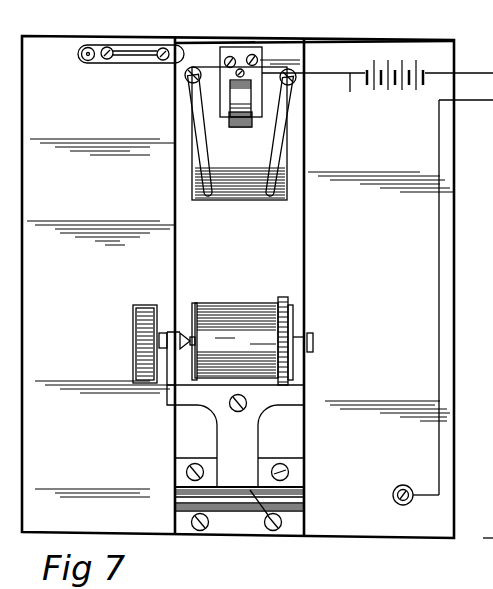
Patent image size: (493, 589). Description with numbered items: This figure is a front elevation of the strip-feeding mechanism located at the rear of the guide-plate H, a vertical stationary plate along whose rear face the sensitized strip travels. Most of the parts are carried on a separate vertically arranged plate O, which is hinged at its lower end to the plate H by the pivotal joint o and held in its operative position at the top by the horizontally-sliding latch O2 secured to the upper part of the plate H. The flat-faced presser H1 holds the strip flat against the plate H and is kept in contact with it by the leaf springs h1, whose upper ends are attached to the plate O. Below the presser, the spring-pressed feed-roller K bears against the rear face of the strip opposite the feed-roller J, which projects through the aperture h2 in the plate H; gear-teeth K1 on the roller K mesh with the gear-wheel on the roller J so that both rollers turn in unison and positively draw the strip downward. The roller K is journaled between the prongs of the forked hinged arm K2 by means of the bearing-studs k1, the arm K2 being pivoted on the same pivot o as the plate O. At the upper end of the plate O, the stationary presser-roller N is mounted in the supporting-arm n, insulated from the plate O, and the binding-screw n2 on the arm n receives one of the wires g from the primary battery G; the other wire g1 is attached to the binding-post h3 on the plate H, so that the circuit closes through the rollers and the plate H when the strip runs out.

The horizontally-sliding latch O2 is at (130, 64).
The supporting-arm n is at (222, 87).
The binding-screw n2 is at (256, 90).
The presser-roller N is at (262, 73).
The primary battery G is at (430, 96).
The conducting-wire g is at (342, 97).
The flat-faced presser H1 is at (250, 163).
The springs h1 is at (198, 112).
The plate O is at (253, 256).
The spring-pressed feed-roller K is at (242, 341).
The gear-teeth K1 is at (287, 385).
The bearing-studs k1 is at (313, 337).
The aperture h2 is at (190, 303).
The hinged arm K2 is at (246, 410).
The hinge or pivotal joint o is at (304, 495).
The binding-post h3 is at (393, 495).
The conducting-wire g1 is at (397, 442).
The guide-plate H is at (98, 465).
The feed-roller J is at (479, 386).